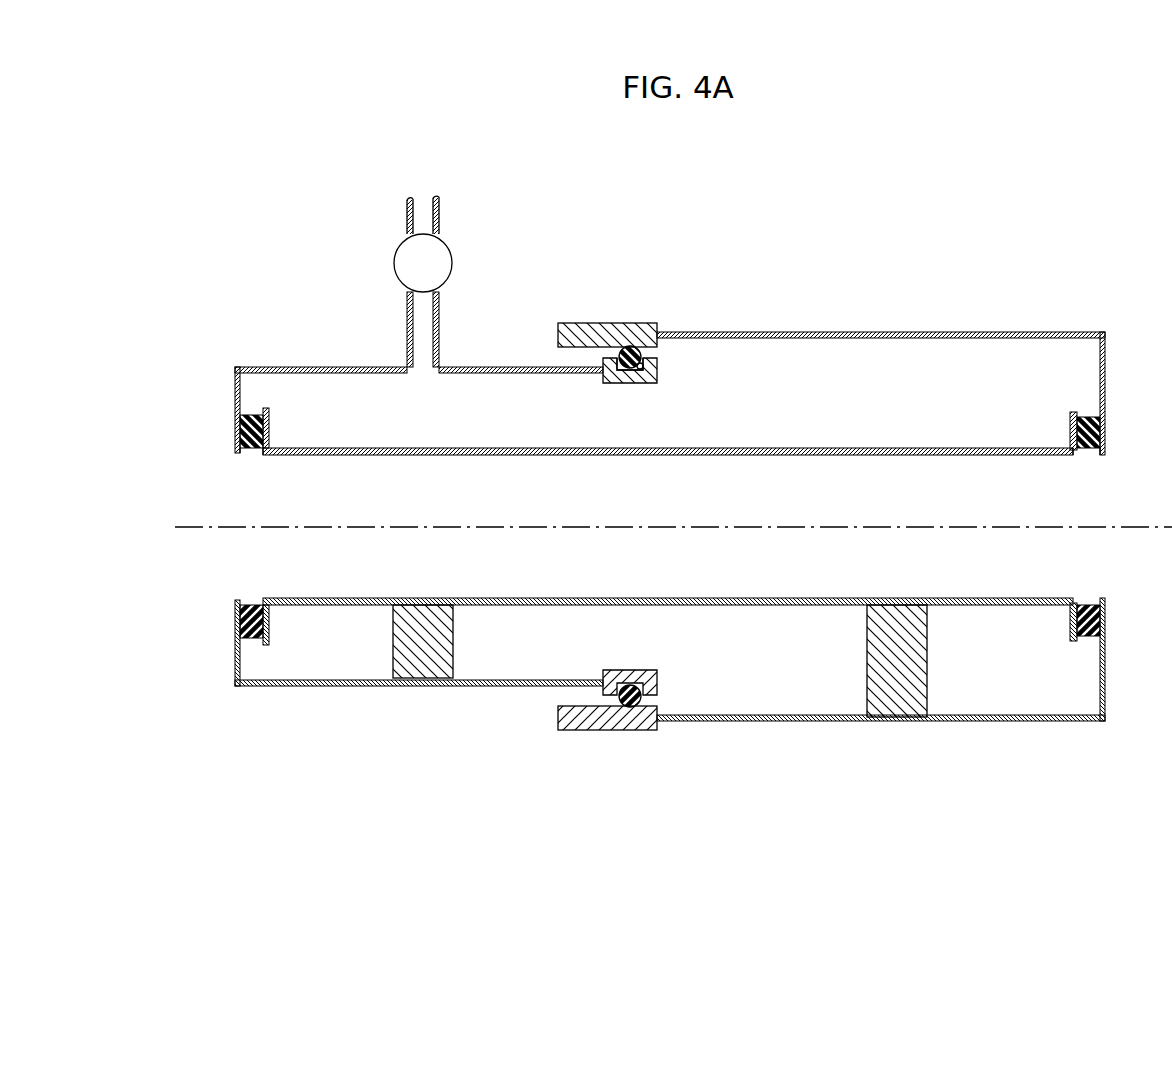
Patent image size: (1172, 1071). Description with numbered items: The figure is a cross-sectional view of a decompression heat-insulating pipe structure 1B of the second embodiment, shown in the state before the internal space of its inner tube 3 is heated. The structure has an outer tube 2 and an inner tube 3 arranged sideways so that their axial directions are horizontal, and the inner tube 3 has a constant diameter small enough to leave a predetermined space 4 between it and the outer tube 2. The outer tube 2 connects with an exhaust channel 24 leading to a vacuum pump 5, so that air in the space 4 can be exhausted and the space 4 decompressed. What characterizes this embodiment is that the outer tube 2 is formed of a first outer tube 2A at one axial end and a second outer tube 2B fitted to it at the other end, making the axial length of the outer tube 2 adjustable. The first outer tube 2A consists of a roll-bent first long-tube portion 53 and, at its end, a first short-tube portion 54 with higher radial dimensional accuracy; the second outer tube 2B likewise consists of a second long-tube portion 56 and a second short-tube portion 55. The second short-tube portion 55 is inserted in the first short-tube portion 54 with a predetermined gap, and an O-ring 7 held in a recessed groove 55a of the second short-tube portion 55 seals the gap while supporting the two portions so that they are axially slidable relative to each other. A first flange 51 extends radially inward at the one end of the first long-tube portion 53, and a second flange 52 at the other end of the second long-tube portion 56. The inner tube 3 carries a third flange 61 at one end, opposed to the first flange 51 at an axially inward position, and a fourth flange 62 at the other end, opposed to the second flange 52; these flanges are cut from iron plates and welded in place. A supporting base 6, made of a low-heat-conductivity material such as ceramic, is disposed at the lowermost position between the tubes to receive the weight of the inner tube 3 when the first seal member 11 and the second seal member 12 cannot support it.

The decompression heat-insulating pipe structure 1B is at (905, 197).
The outer tube 2 is at (874, 330).
The first outer tube 2A is at (748, 274).
The second outer tube 2B is at (555, 274).
The inner tube 3 is at (919, 446).
The space 4 is at (970, 396).
The vacuum pump 5 is at (408, 264).
The supporting base 6 is at (425, 667).
The O-ring 7 is at (628, 348).
The first seal member 11 is at (1085, 449).
The second seal member 12 is at (250, 446).
The exhaust channel 24 is at (423, 325).
The first flange 51 is at (1101, 437).
The second flange 52 is at (237, 429).
The first long-tube portion 53 is at (736, 332).
The first short-tube portion 54 is at (648, 323).
The second short-tube portion 55 is at (600, 365).
The recessed groove 55a is at (642, 366).
The second long-tube portion 56 is at (490, 367).
The third flange 61 is at (1070, 425).
The fourth flange 62 is at (268, 428).